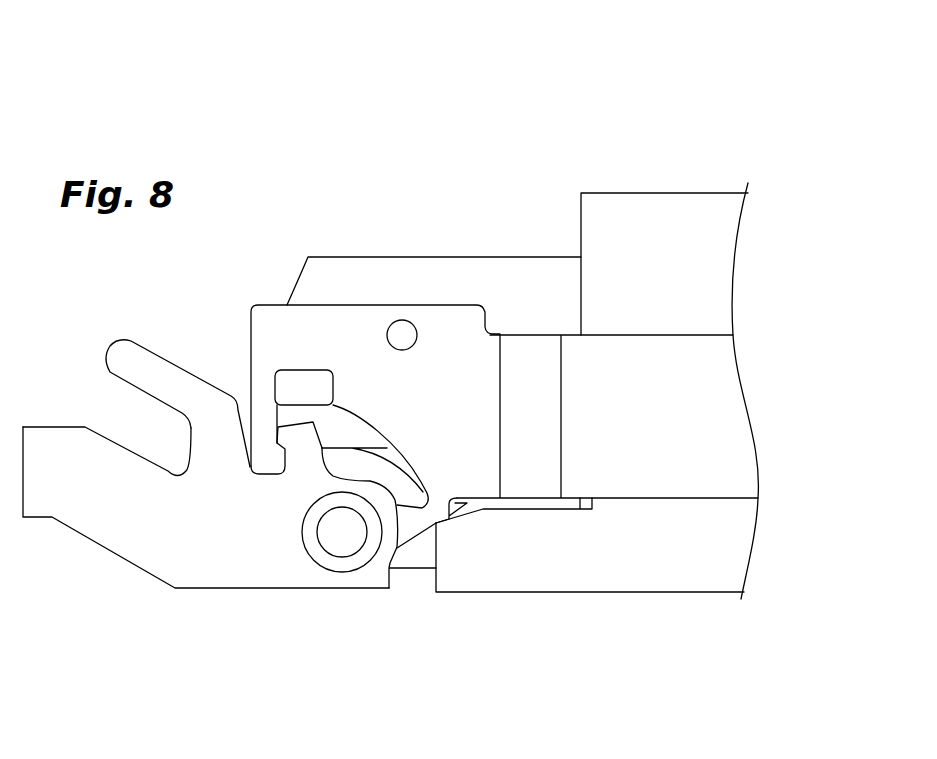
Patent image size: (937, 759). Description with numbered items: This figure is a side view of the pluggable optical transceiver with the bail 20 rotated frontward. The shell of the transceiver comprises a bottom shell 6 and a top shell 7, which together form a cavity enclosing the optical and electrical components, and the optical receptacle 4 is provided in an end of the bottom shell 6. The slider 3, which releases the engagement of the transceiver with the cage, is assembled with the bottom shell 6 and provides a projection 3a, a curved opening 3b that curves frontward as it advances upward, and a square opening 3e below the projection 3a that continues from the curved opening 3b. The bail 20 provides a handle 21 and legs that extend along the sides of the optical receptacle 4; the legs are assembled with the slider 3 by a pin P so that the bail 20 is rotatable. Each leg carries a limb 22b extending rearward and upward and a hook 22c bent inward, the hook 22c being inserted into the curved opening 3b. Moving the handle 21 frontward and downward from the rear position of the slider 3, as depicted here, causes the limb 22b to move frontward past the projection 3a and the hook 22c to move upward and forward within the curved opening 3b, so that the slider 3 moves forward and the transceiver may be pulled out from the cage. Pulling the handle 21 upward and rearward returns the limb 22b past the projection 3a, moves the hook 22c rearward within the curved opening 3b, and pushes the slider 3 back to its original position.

The slider 3 is at (247, 341).
The projection 3a is at (403, 333).
The curved opening 3b is at (408, 466).
The square opening 3e is at (318, 388).
The optical receptacle 4 is at (318, 277).
The bottom shell 6 is at (582, 556).
The top shell 7 is at (642, 212).
The bail 20 is at (90, 552).
The handle 21 is at (55, 437).
The limb 22b is at (135, 358).
The hook 22c is at (295, 427).
The pin P is at (339, 537).